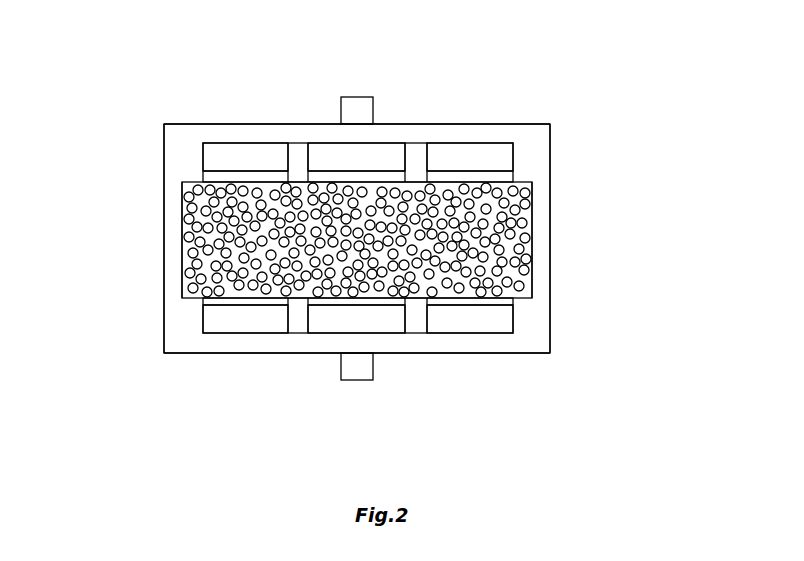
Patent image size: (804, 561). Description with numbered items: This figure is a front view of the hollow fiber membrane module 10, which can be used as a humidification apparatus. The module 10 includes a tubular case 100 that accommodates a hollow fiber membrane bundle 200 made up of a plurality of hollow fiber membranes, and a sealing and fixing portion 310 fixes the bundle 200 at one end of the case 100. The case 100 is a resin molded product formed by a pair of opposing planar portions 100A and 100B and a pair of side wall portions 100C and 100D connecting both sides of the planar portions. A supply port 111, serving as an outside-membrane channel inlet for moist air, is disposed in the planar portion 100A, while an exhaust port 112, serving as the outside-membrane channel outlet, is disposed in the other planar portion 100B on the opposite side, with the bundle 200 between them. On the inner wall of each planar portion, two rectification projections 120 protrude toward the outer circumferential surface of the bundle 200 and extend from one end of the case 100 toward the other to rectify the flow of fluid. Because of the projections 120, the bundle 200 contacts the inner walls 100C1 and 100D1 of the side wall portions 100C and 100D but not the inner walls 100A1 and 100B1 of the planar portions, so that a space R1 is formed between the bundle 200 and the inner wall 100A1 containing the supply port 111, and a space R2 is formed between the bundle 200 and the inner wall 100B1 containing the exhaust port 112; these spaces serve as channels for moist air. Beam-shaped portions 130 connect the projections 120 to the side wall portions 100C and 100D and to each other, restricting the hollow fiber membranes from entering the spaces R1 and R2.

The hollow fiber membrane module 10 is at (595, 117).
The tubular case 100 is at (562, 330).
The planar portion 100A is at (430, 132).
The inner wall of planar portion 100A1 is at (238, 146).
The planar portion 100B is at (437, 343).
The inner wall of planar portion 100B1 is at (492, 325).
The side wall portion 100C is at (173, 208).
The inner wall of side wall portion 100C1 is at (184, 263).
The side wall portion 100D is at (540, 238).
The inner wall of side wall portion 100D1 is at (522, 273).
The supply port 111 is at (363, 100).
The exhaust port 112 is at (365, 382).
The rectification projection 120 is at (297, 162).
The beam-shaped portion 130 is at (225, 176).
The hollow fiber membrane bundle 200 is at (522, 213).
The sealing and fixing portion 310 is at (188, 238).
The space R1 is at (212, 161).
The space R2 is at (212, 321).